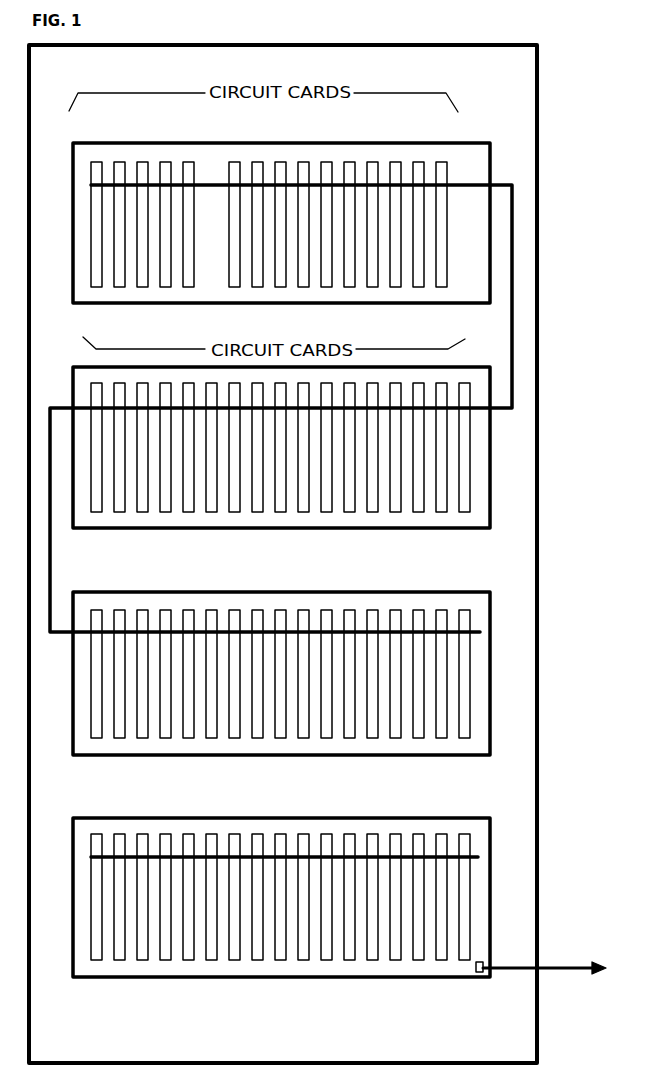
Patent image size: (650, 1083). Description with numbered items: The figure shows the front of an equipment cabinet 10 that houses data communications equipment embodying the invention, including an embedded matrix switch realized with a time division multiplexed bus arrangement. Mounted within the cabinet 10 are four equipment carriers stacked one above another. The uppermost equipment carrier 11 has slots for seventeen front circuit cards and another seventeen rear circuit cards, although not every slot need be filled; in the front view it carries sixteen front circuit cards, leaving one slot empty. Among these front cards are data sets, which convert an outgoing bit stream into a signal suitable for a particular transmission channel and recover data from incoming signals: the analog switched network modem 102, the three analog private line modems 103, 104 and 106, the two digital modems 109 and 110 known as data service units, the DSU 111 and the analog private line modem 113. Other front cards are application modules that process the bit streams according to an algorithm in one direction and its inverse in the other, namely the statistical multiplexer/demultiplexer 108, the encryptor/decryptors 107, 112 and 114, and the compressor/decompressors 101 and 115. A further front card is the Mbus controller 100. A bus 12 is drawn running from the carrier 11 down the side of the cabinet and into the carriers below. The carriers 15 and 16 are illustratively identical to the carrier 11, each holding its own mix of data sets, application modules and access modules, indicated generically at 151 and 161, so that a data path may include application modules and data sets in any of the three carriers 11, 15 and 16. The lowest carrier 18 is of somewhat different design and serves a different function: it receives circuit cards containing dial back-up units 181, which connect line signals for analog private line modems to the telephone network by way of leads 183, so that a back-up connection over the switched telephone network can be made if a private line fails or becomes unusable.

The equipment cabinet 10 is at (560, 50).
The equipment carrier 11 is at (480, 144).
The bus 12 is at (510, 185).
The carrier 15 is at (499, 541).
The carrier 16 is at (507, 587).
The carrier 18 is at (510, 806).
The Mbus controller 100 is at (95, 162).
The compressor/decompressor 101 is at (119, 287).
The analog switched network modem 102 is at (141, 162).
The analog private line modem 103 is at (165, 287).
The analog private line modem 104 is at (187, 162).
The analog private line modem 106 is at (233, 162).
The encryptor/decryptor 107 is at (257, 287).
The statistical multiplexer/demultiplexer 108 is at (279, 162).
The digital modem 109 is at (303, 287).
The digital modem 110 is at (325, 162).
The DSU 111 is at (349, 287).
The encryptor/decryptor 112 is at (371, 162).
The analog private line modem 113 is at (395, 287).
The encryptor/decryptor 114 is at (417, 162).
The compressor/decompressor 115 is at (441, 287).
The data sets, application modules and access modules 151 is at (403, 512).
The data sets, application modules and access modules 161 is at (188, 610).
The dial back-up units 181 is at (400, 834).
The leads 183 is at (556, 964).